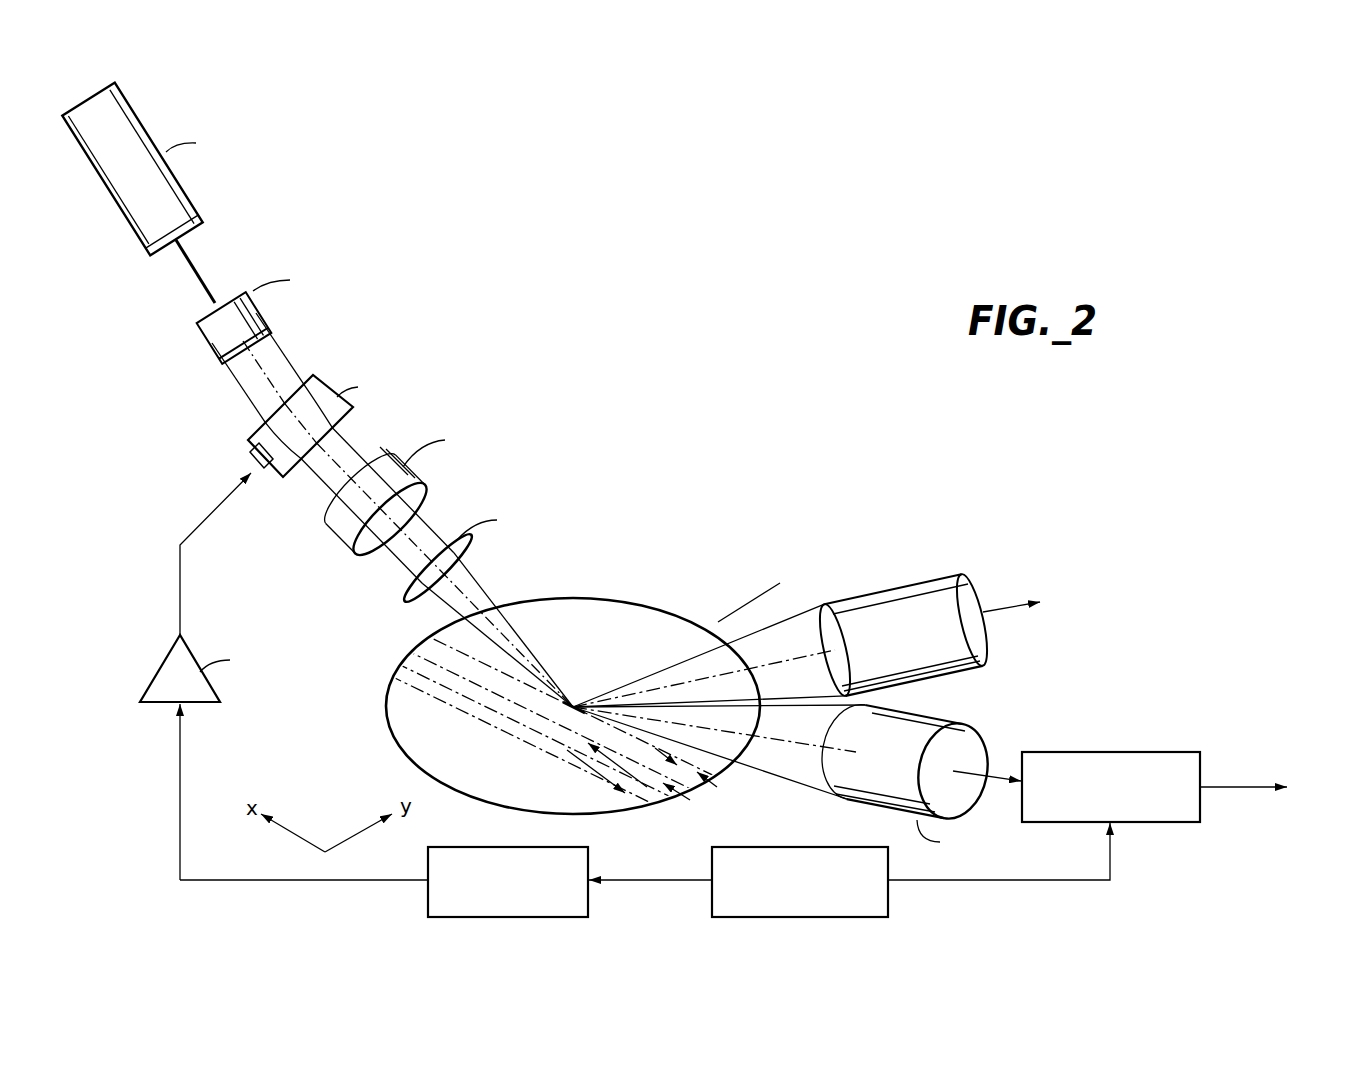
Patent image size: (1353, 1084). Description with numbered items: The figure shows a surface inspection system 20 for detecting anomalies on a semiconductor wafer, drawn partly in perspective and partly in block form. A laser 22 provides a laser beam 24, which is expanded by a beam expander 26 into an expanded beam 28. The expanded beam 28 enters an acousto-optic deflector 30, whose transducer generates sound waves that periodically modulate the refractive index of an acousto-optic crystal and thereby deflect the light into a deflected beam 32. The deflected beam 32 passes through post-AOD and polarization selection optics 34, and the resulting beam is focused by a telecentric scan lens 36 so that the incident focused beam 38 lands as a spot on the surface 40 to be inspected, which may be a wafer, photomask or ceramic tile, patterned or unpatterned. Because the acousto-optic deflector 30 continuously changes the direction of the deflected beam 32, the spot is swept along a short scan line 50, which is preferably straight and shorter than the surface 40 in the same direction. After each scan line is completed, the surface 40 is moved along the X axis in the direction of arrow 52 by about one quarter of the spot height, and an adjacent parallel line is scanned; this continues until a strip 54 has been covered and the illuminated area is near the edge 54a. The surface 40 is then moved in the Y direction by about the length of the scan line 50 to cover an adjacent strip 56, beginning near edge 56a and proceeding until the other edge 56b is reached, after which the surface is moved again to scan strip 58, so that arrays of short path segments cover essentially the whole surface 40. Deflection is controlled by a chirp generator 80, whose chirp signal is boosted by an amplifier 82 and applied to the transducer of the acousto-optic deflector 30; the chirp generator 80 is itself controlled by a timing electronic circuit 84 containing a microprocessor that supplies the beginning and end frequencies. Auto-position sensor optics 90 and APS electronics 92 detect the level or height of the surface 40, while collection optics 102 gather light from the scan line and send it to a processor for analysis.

The surface inspection system 20 is at (757, 217).
The laser 22 is at (146, 123).
The laser beam 24 is at (200, 264).
The beam expander 26 is at (208, 347).
The expanded beam 28 is at (282, 357).
The acousto-optic deflector 30 is at (257, 433).
The deflected beam 32 is at (460, 491).
The post-AOD and polarization selection optics 34 is at (341, 540).
The telecentric scan lens 36 is at (410, 597).
The incident focused beam 38 is at (480, 582).
The surface 40 is at (602, 594).
The scan line 50 is at (577, 702).
The arrow 52 is at (722, 765).
The strip 54 is at (712, 782).
The edge of strip 54a is at (703, 800).
The adjacent strip 56 is at (677, 810).
The edge of adjacent strip 56a is at (693, 810).
The other edge of adjacent strip 56b is at (423, 642).
The strip 58 is at (436, 679).
The chirp generator 80 is at (508, 847).
The amplifier 82 is at (192, 648).
The timing electronic circuit 84 is at (802, 847).
The auto-position sensor optics 90 is at (937, 720).
The APS electronics 92 is at (1113, 752).
The detector optics 102 is at (892, 583).